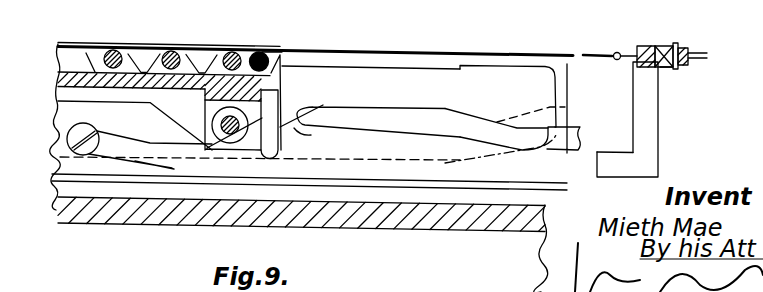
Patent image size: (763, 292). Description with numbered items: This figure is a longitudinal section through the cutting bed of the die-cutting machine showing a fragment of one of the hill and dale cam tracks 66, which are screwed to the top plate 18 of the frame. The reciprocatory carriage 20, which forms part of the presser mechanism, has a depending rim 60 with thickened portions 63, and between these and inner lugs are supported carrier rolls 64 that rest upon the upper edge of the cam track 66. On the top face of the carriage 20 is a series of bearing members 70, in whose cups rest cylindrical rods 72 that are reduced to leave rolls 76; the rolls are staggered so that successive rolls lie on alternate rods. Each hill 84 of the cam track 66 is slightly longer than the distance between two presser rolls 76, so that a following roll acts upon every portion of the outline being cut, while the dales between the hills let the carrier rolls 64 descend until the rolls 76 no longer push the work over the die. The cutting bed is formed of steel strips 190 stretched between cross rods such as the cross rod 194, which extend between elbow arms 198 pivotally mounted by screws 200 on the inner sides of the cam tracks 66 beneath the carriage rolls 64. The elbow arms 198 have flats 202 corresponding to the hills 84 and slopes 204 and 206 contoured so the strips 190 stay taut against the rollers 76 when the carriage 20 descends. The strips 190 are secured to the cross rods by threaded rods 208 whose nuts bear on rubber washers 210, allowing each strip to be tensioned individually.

The plate 18 is at (78, 224).
The reciprocatory carriage 20 is at (295, 50).
The depending rim 60 is at (262, 118).
The thickened portions 63 is at (280, 62).
The carrier rolls 64 is at (160, 110).
The cam tracks 66 is at (412, 118).
The bearing members 70 is at (97, 62).
The cylindrical rods 72 is at (113, 49).
The rolls 76 is at (178, 50).
The hill 84 is at (398, 108).
The steel strips 190 is at (527, 53).
The cross rod 194 is at (638, 47).
The elbow arms 198 is at (657, 123).
The screws 200 is at (88, 127).
The flats 202 is at (443, 127).
The slope 204 is at (318, 129).
The slope 206 is at (565, 107).
The threaded rods 208 is at (707, 55).
The rubber washers 210 is at (666, 68).